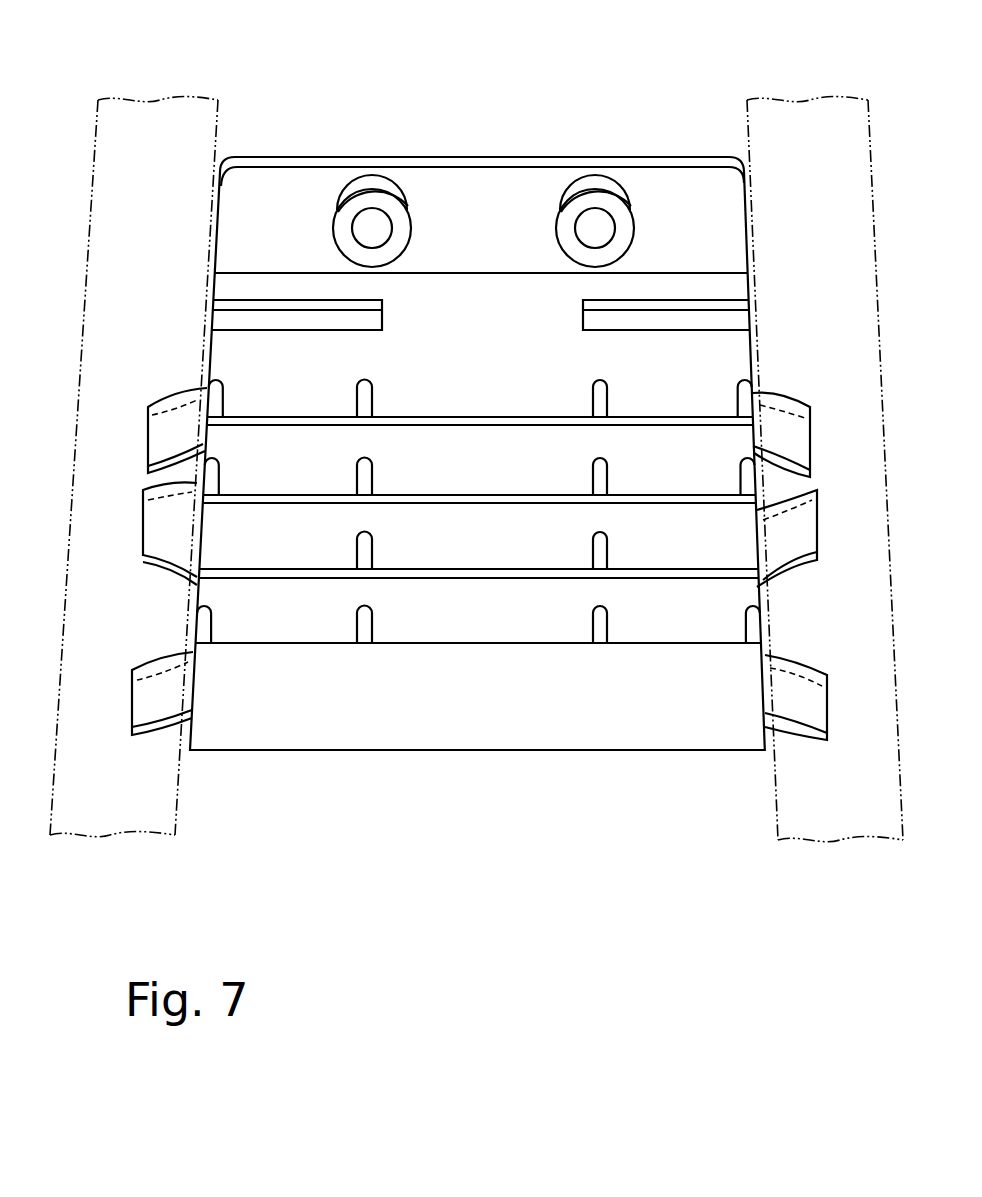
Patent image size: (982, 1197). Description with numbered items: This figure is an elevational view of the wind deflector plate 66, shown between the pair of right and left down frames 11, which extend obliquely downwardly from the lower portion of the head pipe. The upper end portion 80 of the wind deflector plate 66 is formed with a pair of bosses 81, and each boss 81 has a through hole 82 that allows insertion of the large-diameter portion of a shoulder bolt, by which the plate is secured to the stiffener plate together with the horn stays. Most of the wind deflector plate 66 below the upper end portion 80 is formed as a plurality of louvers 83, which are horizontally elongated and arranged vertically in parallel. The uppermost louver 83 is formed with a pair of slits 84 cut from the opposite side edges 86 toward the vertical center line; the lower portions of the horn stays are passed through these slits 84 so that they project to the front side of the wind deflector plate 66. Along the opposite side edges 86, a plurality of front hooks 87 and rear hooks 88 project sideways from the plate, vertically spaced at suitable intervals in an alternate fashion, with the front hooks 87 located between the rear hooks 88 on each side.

The down frame 11 is at (163, 116).
The wind deflector plate 66 is at (457, 137).
The upper end portion 80 is at (517, 157).
The boss 81 is at (372, 197).
The through hole 82 is at (365, 231).
The louver 83 is at (420, 435).
The slit 84 is at (220, 305).
The side edge 86 is at (208, 355).
The front hook 87 is at (155, 520).
The rear hook 88 is at (158, 432).